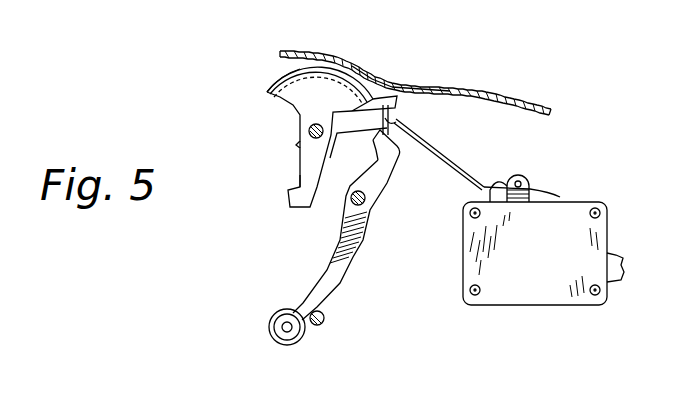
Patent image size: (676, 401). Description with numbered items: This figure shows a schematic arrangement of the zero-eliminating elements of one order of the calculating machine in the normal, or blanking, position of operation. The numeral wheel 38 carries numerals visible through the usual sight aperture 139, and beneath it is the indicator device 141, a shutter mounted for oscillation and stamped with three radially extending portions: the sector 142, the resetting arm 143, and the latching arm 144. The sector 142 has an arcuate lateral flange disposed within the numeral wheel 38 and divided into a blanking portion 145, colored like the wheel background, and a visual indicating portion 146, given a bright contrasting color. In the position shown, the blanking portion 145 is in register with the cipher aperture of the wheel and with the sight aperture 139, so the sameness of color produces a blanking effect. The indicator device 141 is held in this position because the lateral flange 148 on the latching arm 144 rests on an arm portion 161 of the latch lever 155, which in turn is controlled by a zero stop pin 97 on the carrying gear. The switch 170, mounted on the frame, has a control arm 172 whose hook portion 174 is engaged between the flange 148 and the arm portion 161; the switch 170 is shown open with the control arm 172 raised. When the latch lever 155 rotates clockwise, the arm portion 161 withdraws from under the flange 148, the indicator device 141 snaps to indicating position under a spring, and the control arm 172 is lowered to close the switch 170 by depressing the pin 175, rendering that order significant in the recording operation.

The numeral wheel 38 is at (280, 70).
The zero stop pin 97 is at (318, 323).
The sight aperture 139 is at (364, 65).
The indicator device 141 is at (298, 146).
The sector 142 is at (350, 102).
The resetting arm 143 is at (302, 180).
The latching arm 144 is at (358, 143).
The blanking portion 145 is at (384, 76).
The visual indicating portion 146 is at (304, 80).
The lateral flange 148 is at (402, 91).
The latch lever 155 is at (343, 248).
The arm portion 161 is at (373, 164).
The switch 170 is at (574, 269).
The control arm 172 is at (466, 166).
The hook portion 174 is at (393, 118).
The pin 175 is at (463, 203).